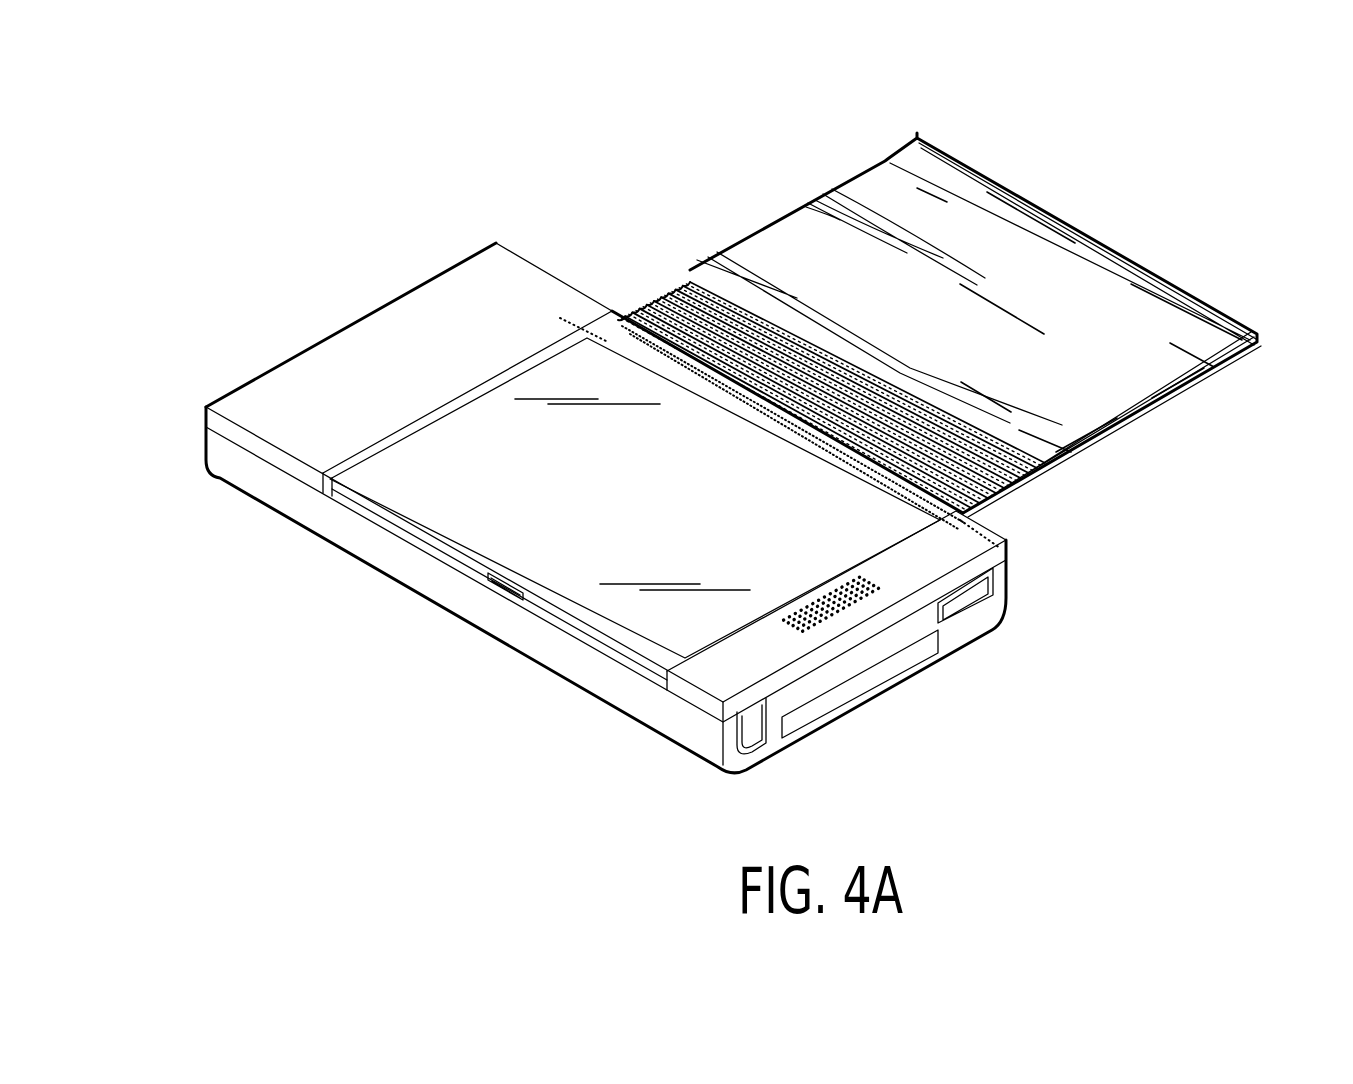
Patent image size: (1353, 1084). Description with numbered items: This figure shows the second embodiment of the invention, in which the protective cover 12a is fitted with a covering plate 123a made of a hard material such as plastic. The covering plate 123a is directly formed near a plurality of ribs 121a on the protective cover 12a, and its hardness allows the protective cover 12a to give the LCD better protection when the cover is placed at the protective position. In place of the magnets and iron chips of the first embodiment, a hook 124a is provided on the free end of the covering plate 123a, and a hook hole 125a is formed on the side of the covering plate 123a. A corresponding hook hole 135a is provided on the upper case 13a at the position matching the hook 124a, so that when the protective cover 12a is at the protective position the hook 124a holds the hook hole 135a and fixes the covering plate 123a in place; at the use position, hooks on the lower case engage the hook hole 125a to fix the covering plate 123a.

The protective cover 12a is at (1100, 448).
The upper case 13a is at (315, 388).
The ribs 121a is at (1000, 495).
The covering plate 123a is at (803, 207).
The hook 124a is at (1097, 238).
The hook hole 125a is at (1193, 378).
The hook hole 135a is at (488, 583).